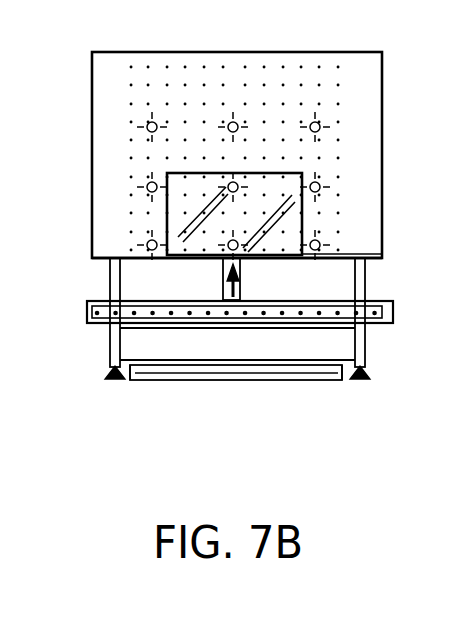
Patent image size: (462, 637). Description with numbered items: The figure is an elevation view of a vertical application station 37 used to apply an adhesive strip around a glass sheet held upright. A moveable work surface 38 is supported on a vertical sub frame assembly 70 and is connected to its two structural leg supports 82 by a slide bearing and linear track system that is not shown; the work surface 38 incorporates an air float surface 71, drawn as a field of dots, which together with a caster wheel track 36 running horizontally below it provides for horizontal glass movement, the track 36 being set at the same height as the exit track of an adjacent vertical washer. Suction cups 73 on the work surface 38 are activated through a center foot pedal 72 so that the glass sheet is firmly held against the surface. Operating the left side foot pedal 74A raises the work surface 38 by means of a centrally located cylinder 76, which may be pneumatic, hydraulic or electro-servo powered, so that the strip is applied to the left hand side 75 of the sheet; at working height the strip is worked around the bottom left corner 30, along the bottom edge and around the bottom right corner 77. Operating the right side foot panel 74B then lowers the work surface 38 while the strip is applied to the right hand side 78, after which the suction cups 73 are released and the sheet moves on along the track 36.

The bottom left corner 30 is at (150, 259).
The caster wheel track 36 is at (110, 318).
The vertical application station 37 is at (212, 347).
The moveable work surface 38 is at (292, 90).
The vertical sub frame assembly 70 is at (355, 284).
The air float surface 71 is at (216, 75).
The center foot pedal 72 is at (238, 368).
The suction cups 73 is at (151, 122).
The left side foot pedal 74A is at (158, 368).
The right side foot panel 74B is at (313, 373).
The left hand side 75 is at (167, 210).
The centrally located cylinder 76 is at (222, 281).
The bottom right corner 77 is at (382, 252).
The right hand side 78 is at (302, 218).
The structural leg supports 82 is at (110, 349).